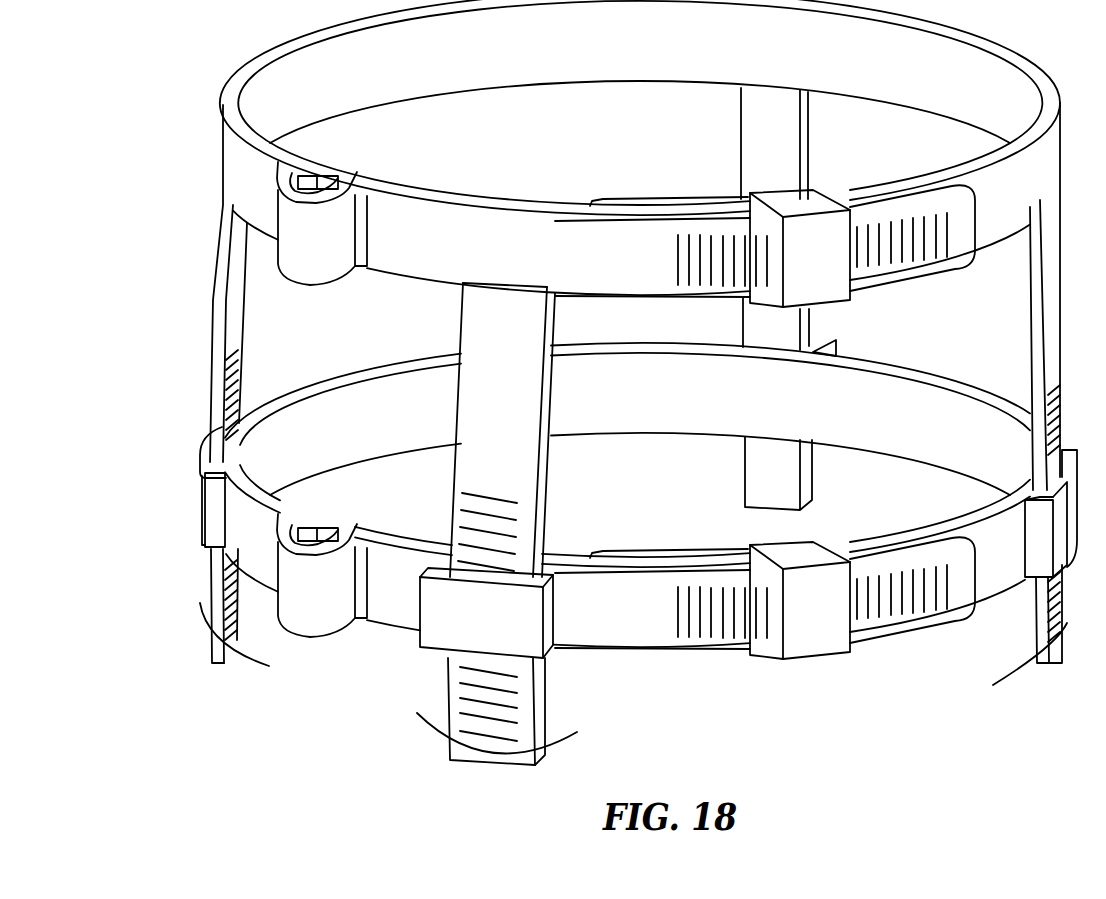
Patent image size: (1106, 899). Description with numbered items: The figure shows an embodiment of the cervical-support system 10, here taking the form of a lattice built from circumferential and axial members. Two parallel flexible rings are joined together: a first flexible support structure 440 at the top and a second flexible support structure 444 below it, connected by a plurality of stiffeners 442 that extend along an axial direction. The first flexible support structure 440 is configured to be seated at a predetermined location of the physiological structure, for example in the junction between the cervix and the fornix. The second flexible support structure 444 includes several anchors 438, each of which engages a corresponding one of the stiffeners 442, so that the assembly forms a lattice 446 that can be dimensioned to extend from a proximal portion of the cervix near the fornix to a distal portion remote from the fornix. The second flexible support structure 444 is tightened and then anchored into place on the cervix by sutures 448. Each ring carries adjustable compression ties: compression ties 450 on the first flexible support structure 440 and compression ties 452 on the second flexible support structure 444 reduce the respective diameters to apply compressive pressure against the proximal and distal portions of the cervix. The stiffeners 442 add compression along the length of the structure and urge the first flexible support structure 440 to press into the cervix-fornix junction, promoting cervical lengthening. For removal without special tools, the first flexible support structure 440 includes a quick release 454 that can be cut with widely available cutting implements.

The first flexible support structure 440 is at (518, 61).
The second flexible support structure 444 is at (368, 433).
The stiffeners 442 is at (525, 333).
The anchors 438 is at (503, 635).
The sutures 448 is at (419, 713).
The compression ties 450 is at (833, 289).
The compression ties 452 is at (813, 640).
The lattice 446 is at (222, 290).
The quick release 454 is at (352, 173).
The cervical-support system 10 is at (215, 819).